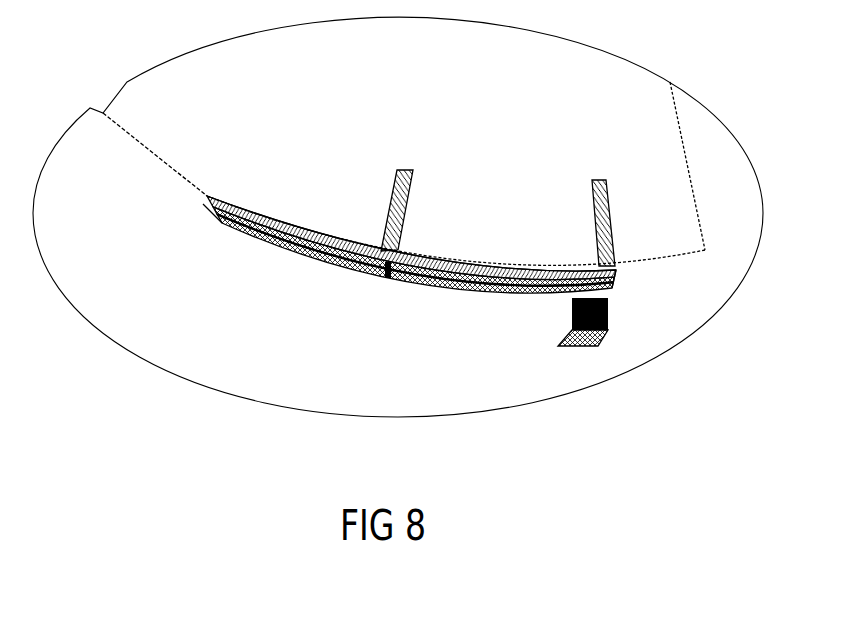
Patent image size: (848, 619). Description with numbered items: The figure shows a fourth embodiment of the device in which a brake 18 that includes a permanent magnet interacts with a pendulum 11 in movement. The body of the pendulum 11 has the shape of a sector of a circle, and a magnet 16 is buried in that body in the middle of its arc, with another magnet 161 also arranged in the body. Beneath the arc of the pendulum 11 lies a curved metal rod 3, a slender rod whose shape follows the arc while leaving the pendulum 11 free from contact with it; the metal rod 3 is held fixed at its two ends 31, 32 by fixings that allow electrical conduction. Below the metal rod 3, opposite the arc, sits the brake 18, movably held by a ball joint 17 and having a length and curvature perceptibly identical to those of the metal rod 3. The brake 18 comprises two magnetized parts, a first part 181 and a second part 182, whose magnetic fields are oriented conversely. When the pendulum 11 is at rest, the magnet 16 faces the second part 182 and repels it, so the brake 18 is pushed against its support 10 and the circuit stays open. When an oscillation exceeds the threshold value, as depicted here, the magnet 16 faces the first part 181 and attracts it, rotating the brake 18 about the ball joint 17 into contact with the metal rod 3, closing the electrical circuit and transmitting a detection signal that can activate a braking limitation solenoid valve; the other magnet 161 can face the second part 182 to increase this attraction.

The pendulum 11 is at (398, 217).
The ball joint 17 is at (155, 154).
The brake 18 is at (168, 213).
The curved metal rod 3 is at (411, 237).
The first end of metal rod 31 is at (411, 215).
The second end of metal rod 32 is at (654, 292).
The first part 181 is at (410, 258).
The second part 182 is at (415, 279).
The magnet 16 is at (435, 206).
The other magnet 161 is at (570, 222).
The support 10 is at (550, 322).